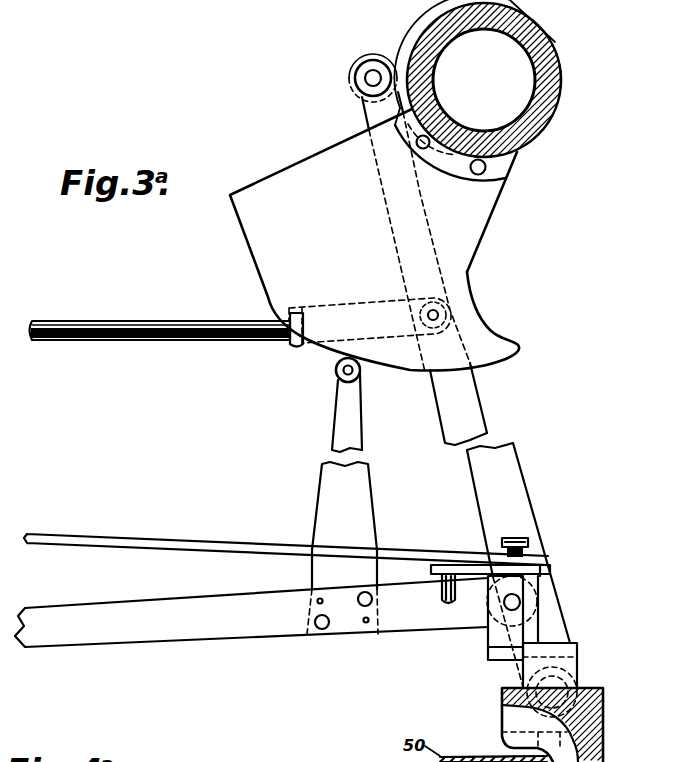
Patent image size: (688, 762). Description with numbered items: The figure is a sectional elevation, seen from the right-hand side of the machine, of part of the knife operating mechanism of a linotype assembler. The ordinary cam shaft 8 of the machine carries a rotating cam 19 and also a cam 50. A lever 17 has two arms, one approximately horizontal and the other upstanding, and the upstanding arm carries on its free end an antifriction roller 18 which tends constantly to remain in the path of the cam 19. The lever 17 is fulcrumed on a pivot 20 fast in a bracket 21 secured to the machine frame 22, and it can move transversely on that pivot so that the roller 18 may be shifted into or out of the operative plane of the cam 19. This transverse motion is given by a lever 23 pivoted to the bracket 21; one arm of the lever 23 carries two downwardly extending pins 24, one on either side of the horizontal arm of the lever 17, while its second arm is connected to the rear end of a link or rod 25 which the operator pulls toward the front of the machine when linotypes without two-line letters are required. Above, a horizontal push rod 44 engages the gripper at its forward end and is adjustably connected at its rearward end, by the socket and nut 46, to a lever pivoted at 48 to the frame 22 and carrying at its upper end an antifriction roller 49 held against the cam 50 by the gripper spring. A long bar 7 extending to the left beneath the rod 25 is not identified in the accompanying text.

The lever bar 7 is at (251, 612).
The cam shaft 8 is at (484, 80).
The lever 17 is at (362, 433).
The antifriction roller 18 is at (336, 370).
The rotating cam 19 is at (252, 254).
The pivot 20 is at (520, 602).
The bracket 21 is at (488, 645).
The machine frame 22 is at (600, 704).
The lever 23 is at (448, 566).
The downwardly extending pins 24 is at (443, 603).
The link or rod 25 is at (286, 541).
The horizontal push rod 44 is at (116, 320).
The socket and nut 46 is at (295, 347).
The pivot 48 is at (504, 691).
The antifriction roller 49 is at (355, 86).
The cam 50 is at (433, 27).